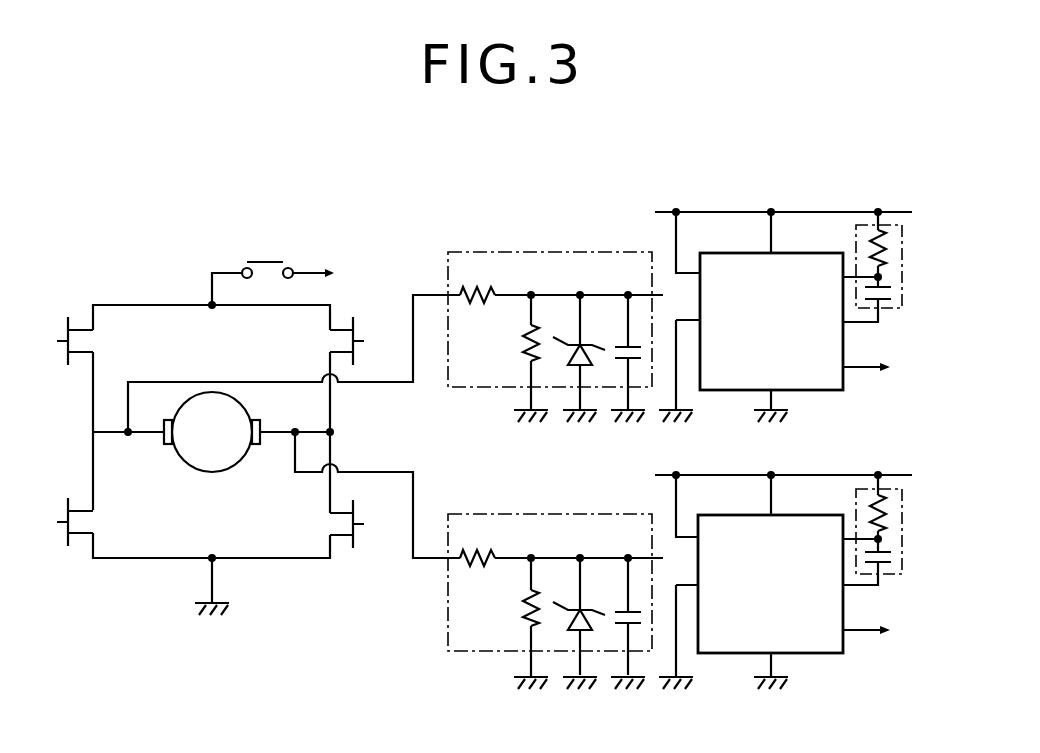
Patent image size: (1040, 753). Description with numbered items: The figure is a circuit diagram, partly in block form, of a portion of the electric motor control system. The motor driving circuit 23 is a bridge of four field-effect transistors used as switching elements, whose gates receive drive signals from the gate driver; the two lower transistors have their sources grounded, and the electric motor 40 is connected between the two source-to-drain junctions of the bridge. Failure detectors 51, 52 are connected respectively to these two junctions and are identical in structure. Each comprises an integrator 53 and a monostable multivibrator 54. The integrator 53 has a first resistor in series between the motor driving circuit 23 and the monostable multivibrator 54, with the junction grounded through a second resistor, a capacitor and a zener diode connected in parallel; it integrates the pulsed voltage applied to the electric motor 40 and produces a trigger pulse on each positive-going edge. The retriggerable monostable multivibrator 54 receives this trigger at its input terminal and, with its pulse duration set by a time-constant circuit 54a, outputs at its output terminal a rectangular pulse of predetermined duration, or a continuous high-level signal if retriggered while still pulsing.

The motor driving circuit 23 is at (252, 448).
The electric motor 40 is at (186, 458).
The failure detector 51 is at (654, 238).
The failure detector 52 is at (620, 500).
The integrator 53 is at (545, 252).
The monostable multivibrator 54 is at (818, 264).
The time-constant circuit 54a is at (905, 300).